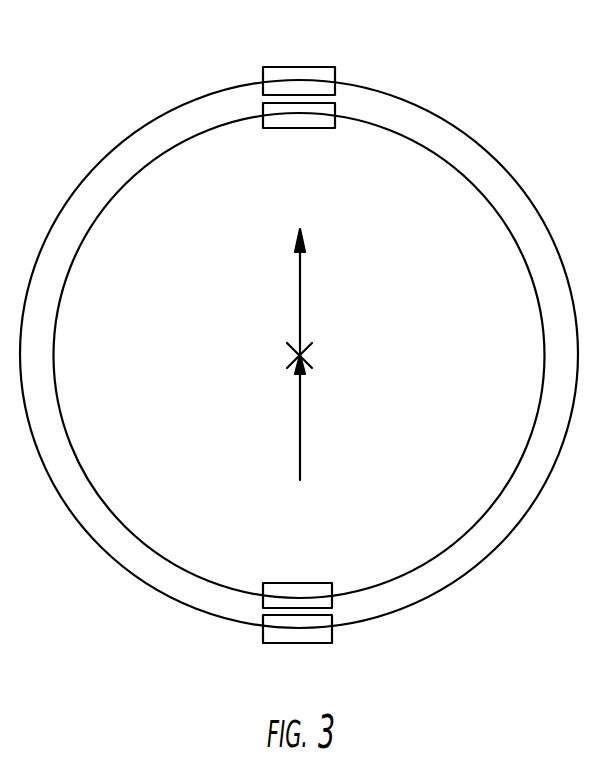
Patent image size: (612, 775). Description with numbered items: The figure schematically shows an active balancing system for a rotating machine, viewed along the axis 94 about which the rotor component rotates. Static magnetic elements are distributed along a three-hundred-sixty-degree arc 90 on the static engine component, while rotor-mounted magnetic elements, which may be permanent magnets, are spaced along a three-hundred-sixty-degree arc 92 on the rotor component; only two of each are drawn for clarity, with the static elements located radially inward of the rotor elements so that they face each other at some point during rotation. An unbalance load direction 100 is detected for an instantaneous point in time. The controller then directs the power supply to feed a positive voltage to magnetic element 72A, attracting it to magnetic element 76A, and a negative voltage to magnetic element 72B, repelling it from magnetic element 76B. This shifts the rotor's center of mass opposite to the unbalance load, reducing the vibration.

The arc 90 is at (112, 205).
The arc 92 is at (478, 140).
The axis 94 is at (305, 357).
The unbalance load direction 100 is at (300, 287).
The magnetic element 72A is at (297, 128).
The magnetic element 72B is at (312, 583).
The magnetic element 76A is at (306, 67).
The magnetic element 76B is at (302, 643).